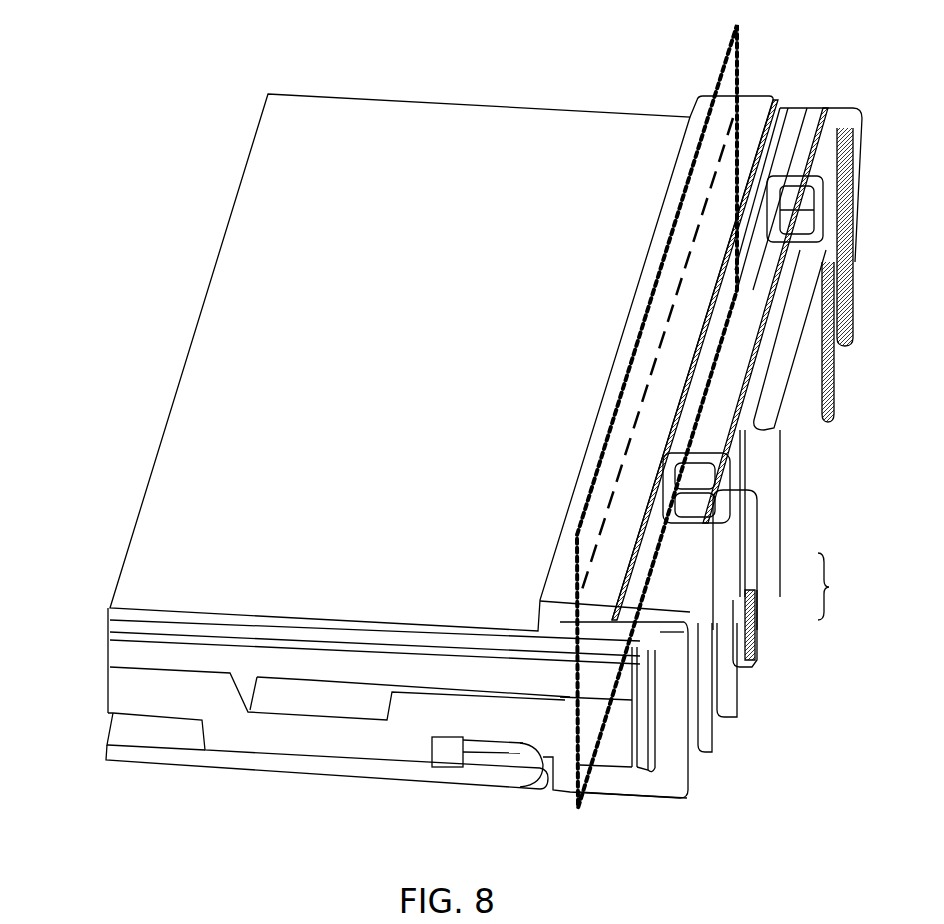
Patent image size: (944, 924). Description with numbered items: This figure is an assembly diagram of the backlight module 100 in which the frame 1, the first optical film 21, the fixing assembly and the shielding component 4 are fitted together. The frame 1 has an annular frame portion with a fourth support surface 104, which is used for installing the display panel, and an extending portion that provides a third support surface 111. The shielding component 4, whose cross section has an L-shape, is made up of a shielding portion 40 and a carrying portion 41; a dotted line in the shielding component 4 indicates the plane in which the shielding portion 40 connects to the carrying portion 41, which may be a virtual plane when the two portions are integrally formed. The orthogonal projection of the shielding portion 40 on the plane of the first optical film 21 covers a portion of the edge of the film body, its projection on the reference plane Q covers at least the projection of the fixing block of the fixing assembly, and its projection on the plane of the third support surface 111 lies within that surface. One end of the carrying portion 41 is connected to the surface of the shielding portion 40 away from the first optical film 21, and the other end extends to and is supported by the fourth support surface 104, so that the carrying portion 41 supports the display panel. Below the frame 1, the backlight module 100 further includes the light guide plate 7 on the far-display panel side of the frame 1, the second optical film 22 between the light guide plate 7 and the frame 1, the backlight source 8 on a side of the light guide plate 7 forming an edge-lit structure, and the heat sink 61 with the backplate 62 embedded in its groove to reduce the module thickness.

The backlight module 100 is at (208, 62).
The reference plane Q is at (742, 77).
The fourth support surface 104 is at (780, 110).
The first optical film 21 is at (112, 610).
The second optical film 22 is at (110, 632).
The light guide plate 7 is at (125, 657).
The backplate 62 is at (113, 757).
The frame 1 is at (668, 699).
The third support surface 111 is at (717, 722).
The backlight source 8 is at (652, 720).
The heat sink 61 is at (610, 783).
The carrying portion 41 is at (729, 526).
The shielding portion 40 is at (560, 611).
The shielding component 4 is at (830, 586).